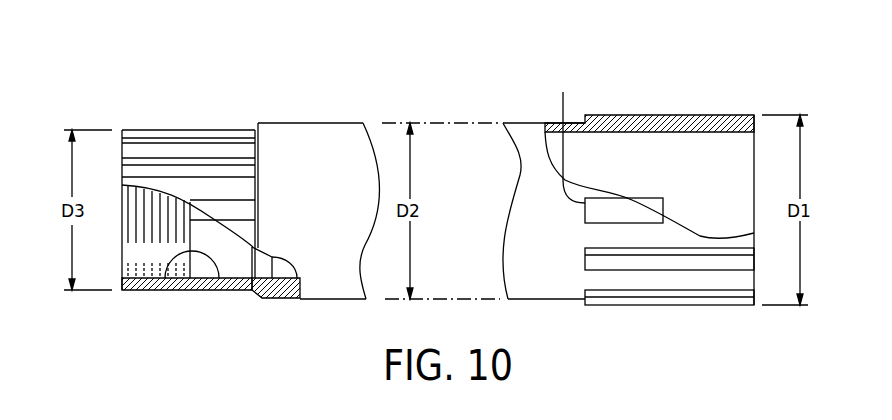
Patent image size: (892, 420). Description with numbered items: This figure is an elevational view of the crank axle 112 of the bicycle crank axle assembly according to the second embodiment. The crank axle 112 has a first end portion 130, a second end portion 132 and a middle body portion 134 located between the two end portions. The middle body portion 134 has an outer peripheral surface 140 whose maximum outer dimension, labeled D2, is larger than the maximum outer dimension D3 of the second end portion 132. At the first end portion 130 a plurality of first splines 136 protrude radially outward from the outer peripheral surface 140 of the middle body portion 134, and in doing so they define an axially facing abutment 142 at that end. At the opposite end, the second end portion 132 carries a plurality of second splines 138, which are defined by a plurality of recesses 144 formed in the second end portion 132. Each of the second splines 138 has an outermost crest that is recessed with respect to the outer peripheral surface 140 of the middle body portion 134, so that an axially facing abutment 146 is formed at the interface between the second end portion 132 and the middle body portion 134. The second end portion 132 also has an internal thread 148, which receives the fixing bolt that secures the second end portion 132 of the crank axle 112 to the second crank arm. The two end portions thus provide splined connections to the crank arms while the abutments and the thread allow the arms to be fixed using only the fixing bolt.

The crank axle 112 is at (407, 80).
The first end portion 130 is at (699, 315).
The second end portion 132 is at (142, 298).
The middle body portion 134 is at (329, 308).
The first splines 136 is at (683, 263).
The second splines 138 is at (195, 150).
The outer peripheral surface 140 is at (312, 122).
The axially facing abutment 142 is at (585, 118).
The recesses 144 is at (147, 170).
The axially facing abutment 146 is at (255, 170).
The internal thread 148 is at (220, 281).